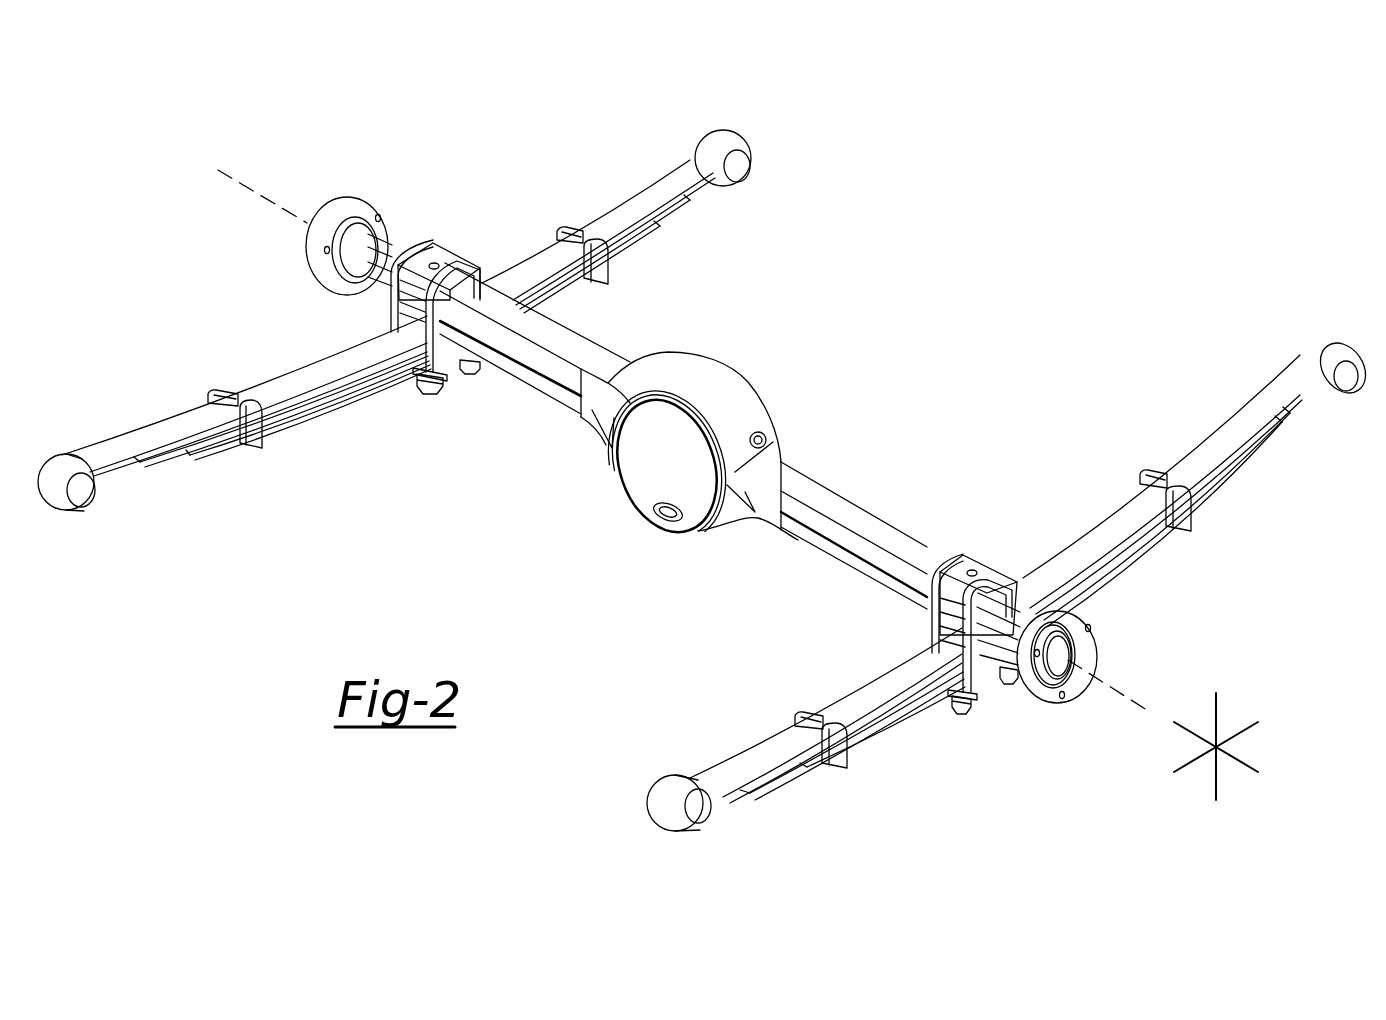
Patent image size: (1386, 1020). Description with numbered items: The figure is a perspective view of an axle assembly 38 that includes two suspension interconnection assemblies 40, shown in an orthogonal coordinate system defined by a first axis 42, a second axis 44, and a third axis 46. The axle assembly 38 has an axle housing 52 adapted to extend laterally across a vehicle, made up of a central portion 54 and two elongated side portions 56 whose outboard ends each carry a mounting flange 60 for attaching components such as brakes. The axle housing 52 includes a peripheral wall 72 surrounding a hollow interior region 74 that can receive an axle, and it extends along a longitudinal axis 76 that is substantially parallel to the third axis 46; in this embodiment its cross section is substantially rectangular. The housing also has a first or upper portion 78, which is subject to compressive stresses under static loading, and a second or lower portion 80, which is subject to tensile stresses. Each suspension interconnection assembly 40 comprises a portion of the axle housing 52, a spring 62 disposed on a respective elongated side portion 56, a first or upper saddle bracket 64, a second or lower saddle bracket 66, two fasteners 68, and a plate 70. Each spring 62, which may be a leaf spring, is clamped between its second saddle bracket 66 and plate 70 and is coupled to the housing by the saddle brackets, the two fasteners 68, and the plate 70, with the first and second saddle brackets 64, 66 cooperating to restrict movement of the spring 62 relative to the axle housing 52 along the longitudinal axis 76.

The axle assembly 38 is at (1106, 226).
The suspension interconnection assembly 40 is at (488, 220).
The first axis 42 is at (1220, 703).
The second axis 44 is at (1247, 727).
The third axis 46 is at (1243, 767).
The axle housing 52 is at (821, 488).
The central portion 54 is at (715, 367).
The elongated side portion 56 is at (590, 345).
The mounting flange 60 is at (340, 208).
The spring 62 is at (663, 192).
The first saddle bracket 64 is at (446, 264).
The second saddle bracket 66 is at (405, 309).
The fastener 68 is at (407, 252).
The plate 70 is at (463, 377).
The peripheral wall 72 is at (557, 342).
The interior region 74 is at (1063, 665).
The longitudinal axis 76 is at (1140, 700).
The first portion 78 is at (855, 505).
The second portion 80 is at (787, 548).